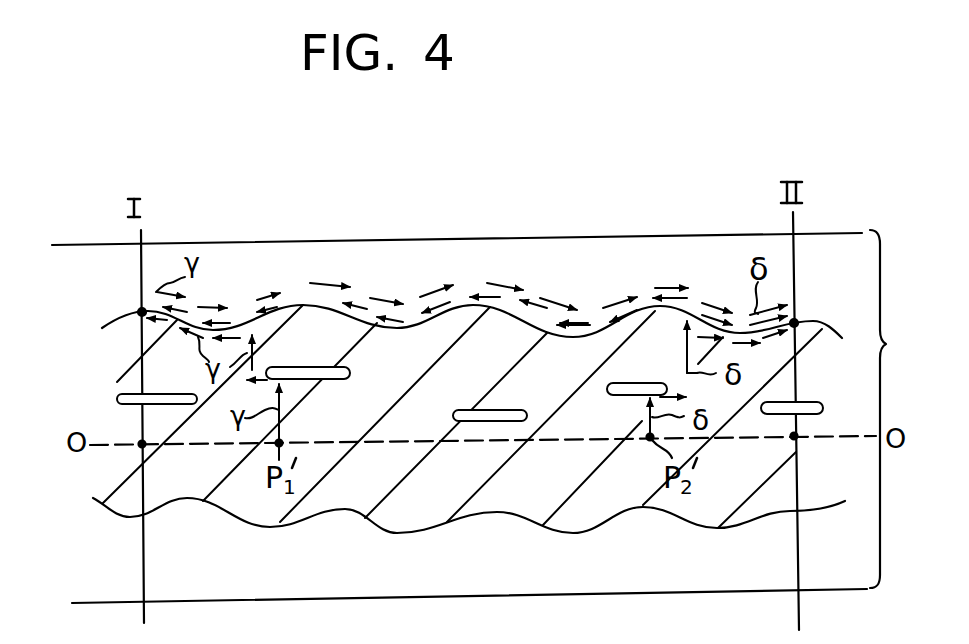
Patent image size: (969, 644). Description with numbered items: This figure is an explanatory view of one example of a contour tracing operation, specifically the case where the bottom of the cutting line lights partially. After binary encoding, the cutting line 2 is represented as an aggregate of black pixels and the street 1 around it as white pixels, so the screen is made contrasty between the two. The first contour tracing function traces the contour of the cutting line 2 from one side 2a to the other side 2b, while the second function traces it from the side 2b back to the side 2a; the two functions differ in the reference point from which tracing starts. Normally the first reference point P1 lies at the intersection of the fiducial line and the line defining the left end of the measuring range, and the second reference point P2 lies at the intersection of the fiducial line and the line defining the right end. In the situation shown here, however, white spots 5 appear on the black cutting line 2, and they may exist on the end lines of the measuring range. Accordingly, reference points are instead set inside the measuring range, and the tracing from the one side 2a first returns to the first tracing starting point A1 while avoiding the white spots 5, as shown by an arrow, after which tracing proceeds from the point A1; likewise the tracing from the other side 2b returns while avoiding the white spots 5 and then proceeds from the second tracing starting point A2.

The street 1 is at (487, 416).
The cutting line 2 is at (266, 513).
The one side of the cutting line 2a is at (116, 345).
The other side of the cutting line 2b is at (845, 501).
The white spots 5 is at (322, 380).
The first tracing starting point A1 is at (142, 312).
The second tracing starting point A2 is at (796, 321).
The first reference point P1 is at (141, 445).
The second reference point P2 is at (797, 438).